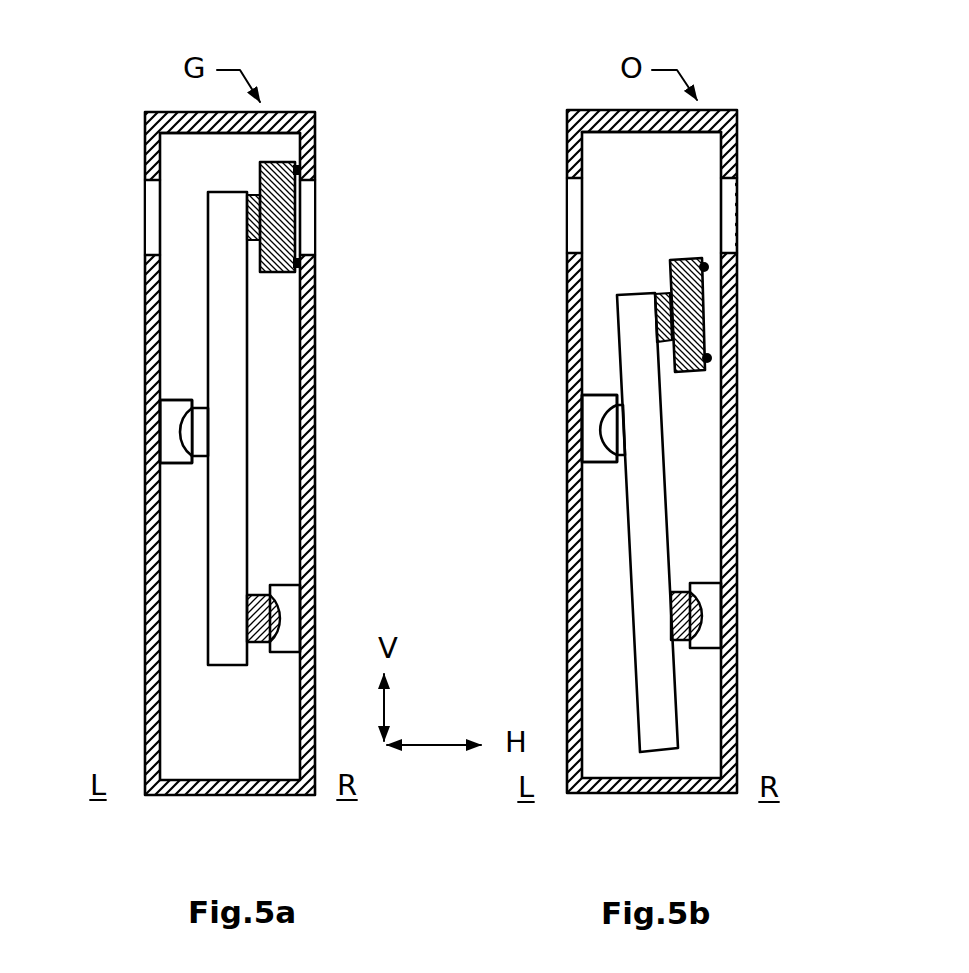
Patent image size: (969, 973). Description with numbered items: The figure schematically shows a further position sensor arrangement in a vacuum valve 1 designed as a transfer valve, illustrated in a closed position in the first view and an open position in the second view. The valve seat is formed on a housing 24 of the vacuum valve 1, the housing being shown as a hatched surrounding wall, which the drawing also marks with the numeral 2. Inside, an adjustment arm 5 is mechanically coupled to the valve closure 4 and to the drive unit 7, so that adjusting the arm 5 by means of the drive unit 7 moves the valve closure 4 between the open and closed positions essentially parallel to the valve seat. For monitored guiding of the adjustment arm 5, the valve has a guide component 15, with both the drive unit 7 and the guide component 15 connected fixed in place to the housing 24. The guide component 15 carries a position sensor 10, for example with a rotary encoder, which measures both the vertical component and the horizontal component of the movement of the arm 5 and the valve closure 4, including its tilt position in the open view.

In FIG. 5A, the vacuum valve 1 is at (187, 400).
In FIG. 5B, the vacuum valve 1 is at (618, 399).
In FIG. 5A, the housing 2 is at (447, 243).
In FIG. 5B, the housing 2 is at (505, 242).
In FIG. 5A, the housing 24 is at (313, 138).
In FIG. 5B, the housing 24 is at (616, 120).
In FIG. 5A, the valve closure 4 is at (339, 217).
In FIG. 5B, the valve closure 4 is at (747, 315).
In FIG. 5A, the adjustment arm 5 is at (314, 428).
In FIG. 5B, the adjustment arm 5 is at (637, 505).
In FIG. 5A, the drive unit 7 is at (365, 618).
In FIG. 5B, the drive unit 7 is at (712, 610).
In FIG. 5A, the position sensor 10 is at (228, 427).
In FIG. 5B, the position sensor 10 is at (549, 417).
In FIG. 5A, the guide component 15 is at (549, 417).
In FIG. 5B, the guide component 15 is at (599, 428).